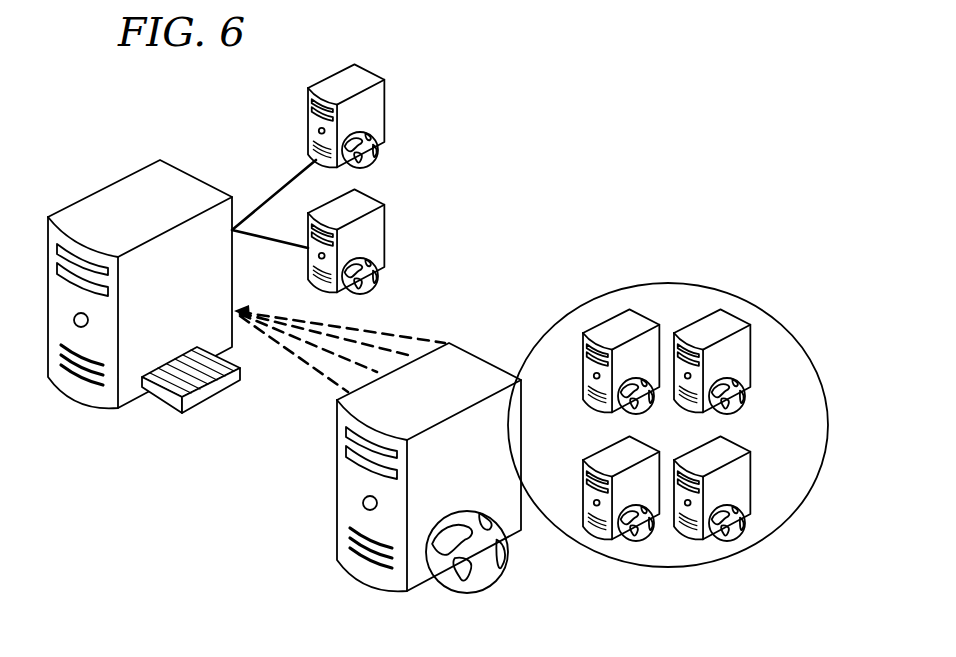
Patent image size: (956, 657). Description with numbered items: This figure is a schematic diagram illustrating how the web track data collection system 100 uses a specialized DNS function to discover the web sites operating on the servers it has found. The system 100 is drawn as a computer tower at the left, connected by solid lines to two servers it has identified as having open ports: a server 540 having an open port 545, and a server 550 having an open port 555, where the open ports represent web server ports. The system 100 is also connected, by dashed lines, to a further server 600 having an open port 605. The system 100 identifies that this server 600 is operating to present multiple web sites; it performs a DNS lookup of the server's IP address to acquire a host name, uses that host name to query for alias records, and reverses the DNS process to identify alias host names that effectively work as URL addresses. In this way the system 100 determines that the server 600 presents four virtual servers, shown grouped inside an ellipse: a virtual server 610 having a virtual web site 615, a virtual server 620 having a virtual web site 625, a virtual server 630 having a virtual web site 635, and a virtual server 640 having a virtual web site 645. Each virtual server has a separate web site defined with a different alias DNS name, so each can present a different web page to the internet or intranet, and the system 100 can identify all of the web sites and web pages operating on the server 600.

The web track data collection system 100 is at (112, 193).
The server 540 is at (380, 109).
The open port 545 is at (379, 154).
The server 550 is at (380, 229).
The open port 555 is at (379, 282).
The server 600 is at (345, 492).
The open port 605 is at (445, 580).
The virtual server 610 is at (612, 320).
The virtual web site 615 is at (617, 402).
The virtual server 620 is at (732, 317).
The virtual web site 625 is at (744, 402).
The virtual server 630 is at (747, 478).
The virtual web site 635 is at (737, 536).
The virtual server 640 is at (590, 488).
The virtual web site 645 is at (633, 538).